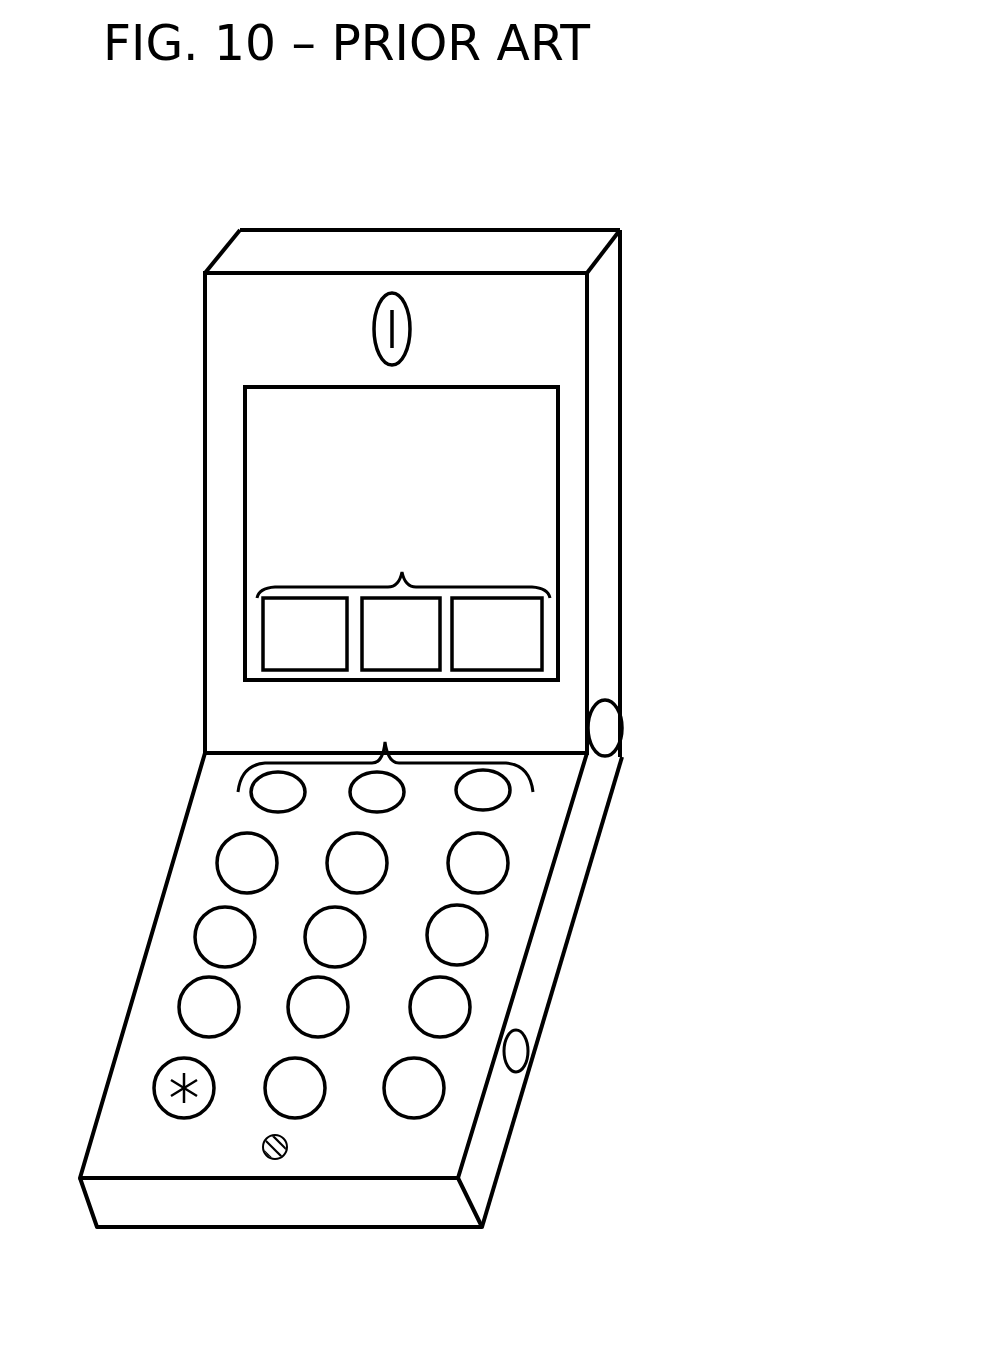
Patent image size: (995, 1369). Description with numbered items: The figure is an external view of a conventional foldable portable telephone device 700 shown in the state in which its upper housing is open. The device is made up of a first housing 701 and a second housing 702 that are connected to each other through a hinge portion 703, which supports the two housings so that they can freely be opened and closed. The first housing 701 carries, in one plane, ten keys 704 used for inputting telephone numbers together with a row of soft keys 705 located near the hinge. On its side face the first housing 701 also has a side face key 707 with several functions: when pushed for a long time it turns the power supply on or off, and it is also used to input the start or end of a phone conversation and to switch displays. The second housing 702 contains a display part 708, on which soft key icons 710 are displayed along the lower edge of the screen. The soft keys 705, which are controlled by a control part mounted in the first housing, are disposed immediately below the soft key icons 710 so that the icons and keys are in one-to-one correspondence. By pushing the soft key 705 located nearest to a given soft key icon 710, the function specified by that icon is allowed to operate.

The foldable portable telephone device 700 is at (556, 181).
The first housing 701 is at (572, 940).
The second housing 702 is at (625, 538).
The hinge portion 703 is at (625, 727).
The ten keys 704 is at (179, 1010).
The soft keys 705 is at (385, 738).
The side face key 707 is at (527, 1060).
The display part 708 is at (335, 385).
The soft key icons 710 is at (402, 572).